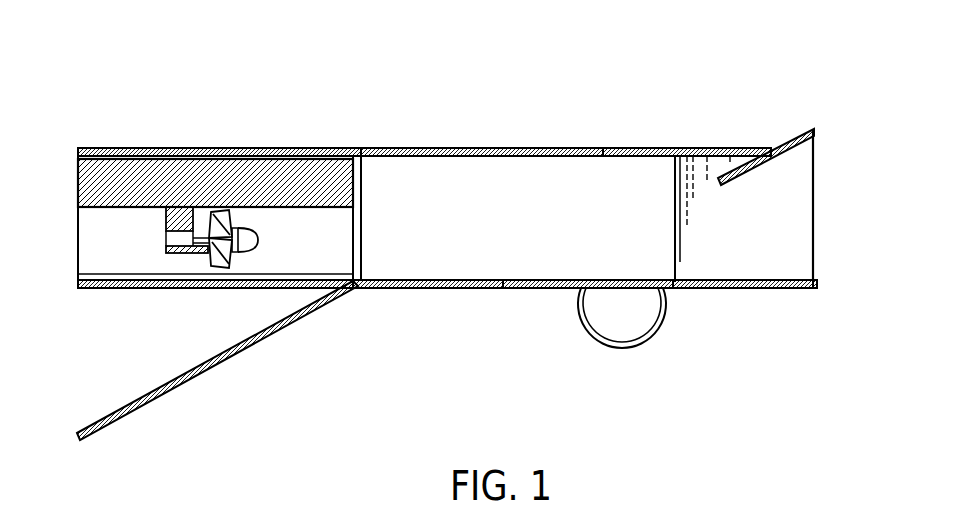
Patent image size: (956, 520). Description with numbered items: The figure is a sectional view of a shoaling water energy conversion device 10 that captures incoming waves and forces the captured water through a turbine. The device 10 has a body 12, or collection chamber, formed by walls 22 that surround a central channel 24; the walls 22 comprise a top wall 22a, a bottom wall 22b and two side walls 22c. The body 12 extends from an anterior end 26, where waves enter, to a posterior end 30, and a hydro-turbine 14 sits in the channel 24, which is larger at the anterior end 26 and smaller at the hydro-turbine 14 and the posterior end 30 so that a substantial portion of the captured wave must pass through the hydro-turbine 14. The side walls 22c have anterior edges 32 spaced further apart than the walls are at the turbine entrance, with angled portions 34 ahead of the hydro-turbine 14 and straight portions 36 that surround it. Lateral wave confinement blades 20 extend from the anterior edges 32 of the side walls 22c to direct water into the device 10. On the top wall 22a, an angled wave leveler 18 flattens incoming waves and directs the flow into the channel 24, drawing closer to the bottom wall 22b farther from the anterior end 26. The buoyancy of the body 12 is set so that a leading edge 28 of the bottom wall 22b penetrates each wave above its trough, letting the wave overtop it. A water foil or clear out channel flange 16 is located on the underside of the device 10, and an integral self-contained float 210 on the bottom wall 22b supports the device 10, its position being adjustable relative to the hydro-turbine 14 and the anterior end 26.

The shoaling water energy conversion device 10 is at (522, 113).
The body 12 is at (467, 267).
The hydro-turbine 14 is at (270, 190).
The clear out channel flange 16 is at (182, 383).
The wave leveler 18 is at (787, 138).
The lateral wave confinement blades 20 is at (728, 255).
The walls 22 is at (397, 148).
The top wall 22a is at (603, 148).
The bottom wall 22b is at (490, 288).
The side walls 22c is at (647, 177).
The central channel 24 is at (788, 209).
The anterior end 26 is at (777, 288).
The leading edge 28 is at (817, 288).
The posterior end 30 is at (202, 148).
The anterior edges 32 is at (675, 288).
The angled portions 34 is at (547, 257).
The straight portions 36 is at (355, 285).
The float 210 is at (612, 322).